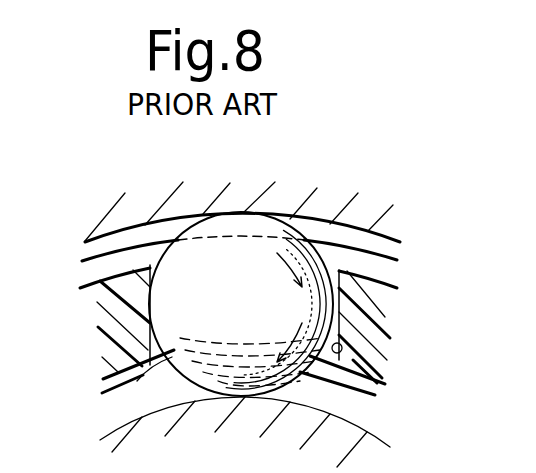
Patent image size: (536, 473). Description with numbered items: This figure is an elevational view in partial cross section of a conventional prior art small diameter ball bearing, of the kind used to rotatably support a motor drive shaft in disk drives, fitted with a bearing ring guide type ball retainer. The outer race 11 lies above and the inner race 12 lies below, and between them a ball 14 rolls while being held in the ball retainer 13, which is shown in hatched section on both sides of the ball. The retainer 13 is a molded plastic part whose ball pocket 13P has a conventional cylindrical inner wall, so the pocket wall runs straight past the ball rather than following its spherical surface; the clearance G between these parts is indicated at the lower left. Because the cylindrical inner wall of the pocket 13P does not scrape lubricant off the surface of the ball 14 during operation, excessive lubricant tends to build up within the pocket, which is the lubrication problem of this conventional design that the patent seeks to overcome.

The outer race 11 is at (358, 218).
The inner race 12 is at (372, 424).
The ball retainer 13 is at (385, 304).
The ball pocket 13P is at (350, 345).
The ball 14 is at (203, 258).
The gap G is at (133, 396).